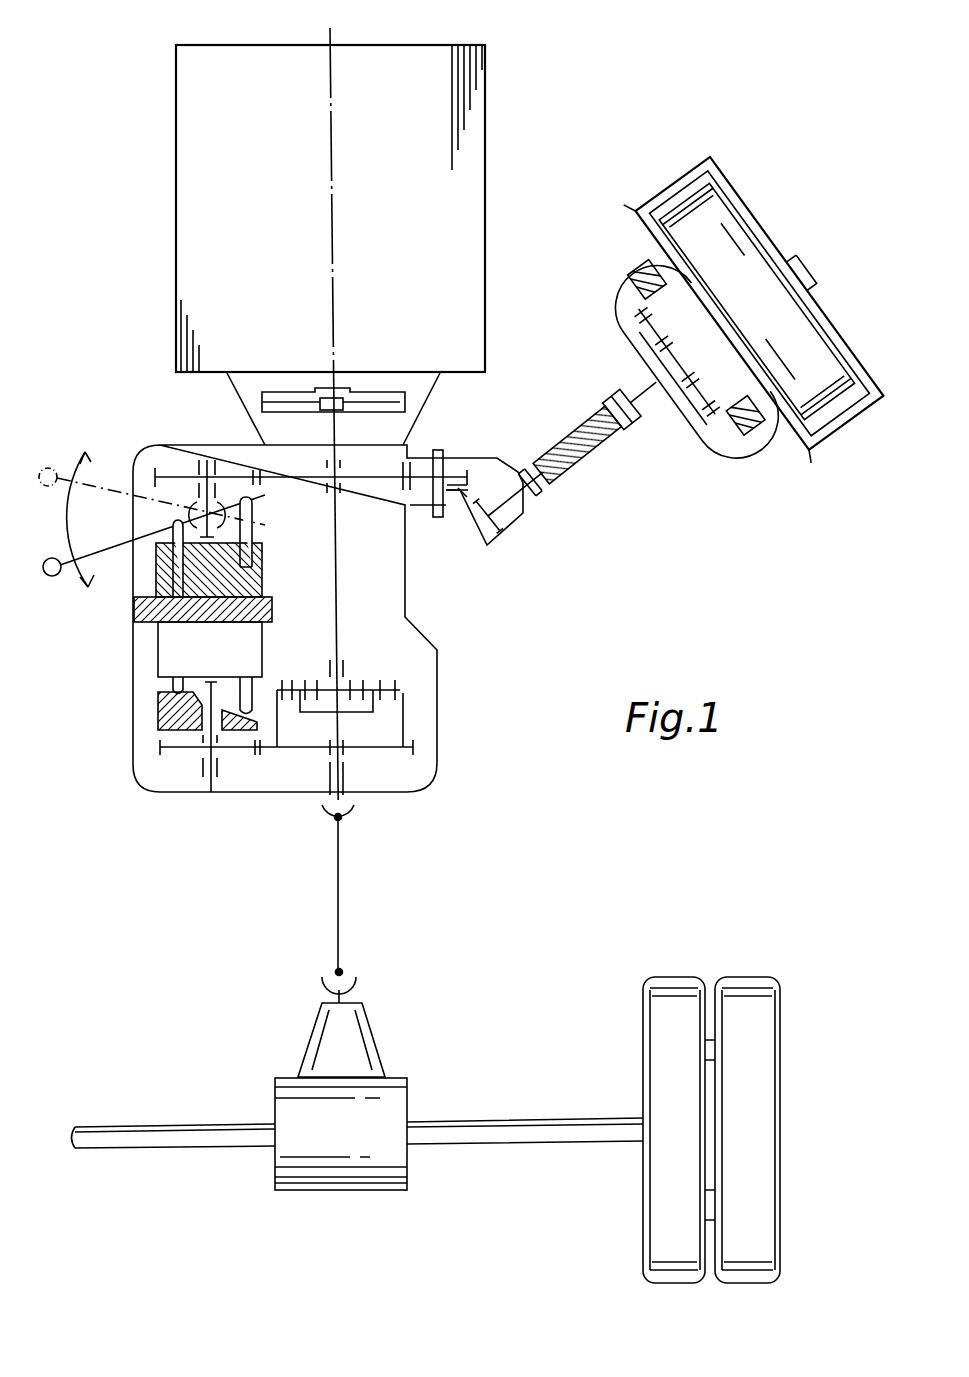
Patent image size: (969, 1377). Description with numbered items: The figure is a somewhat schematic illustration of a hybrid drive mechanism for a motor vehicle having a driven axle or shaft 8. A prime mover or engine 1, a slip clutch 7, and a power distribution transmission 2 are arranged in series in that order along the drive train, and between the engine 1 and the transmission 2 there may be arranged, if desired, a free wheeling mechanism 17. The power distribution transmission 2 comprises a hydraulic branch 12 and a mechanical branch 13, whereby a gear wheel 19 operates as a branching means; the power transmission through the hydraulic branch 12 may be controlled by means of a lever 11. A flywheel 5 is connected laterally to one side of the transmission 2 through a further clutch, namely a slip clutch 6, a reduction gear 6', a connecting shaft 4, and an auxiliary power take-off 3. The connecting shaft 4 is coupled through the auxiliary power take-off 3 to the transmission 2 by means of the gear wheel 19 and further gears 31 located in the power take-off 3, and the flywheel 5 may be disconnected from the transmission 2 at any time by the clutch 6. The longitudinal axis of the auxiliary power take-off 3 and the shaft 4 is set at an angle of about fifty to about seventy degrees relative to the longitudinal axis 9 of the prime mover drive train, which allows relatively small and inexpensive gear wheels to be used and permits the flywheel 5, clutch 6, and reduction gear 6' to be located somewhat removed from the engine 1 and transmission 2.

The engine 1 is at (408, 206).
The power distribution transmission 2 is at (407, 580).
The auxiliary power take-off 3 is at (514, 530).
The connecting shaft 4 is at (568, 420).
The flywheel 5 is at (775, 263).
The slip clutch 6 is at (689, 365).
The reduction gear 6' is at (676, 364).
The slip clutch 7 is at (272, 406).
The driven axle 8 is at (476, 1120).
The longitudinal axis 9 is at (331, 141).
The lever 11 is at (50, 577).
The hydraulic branch 12 is at (163, 655).
The mechanical branch 13 is at (390, 682).
The free wheeling mechanism 17 is at (345, 397).
The gear wheel 19 is at (362, 477).
The further gears 31 is at (428, 507).